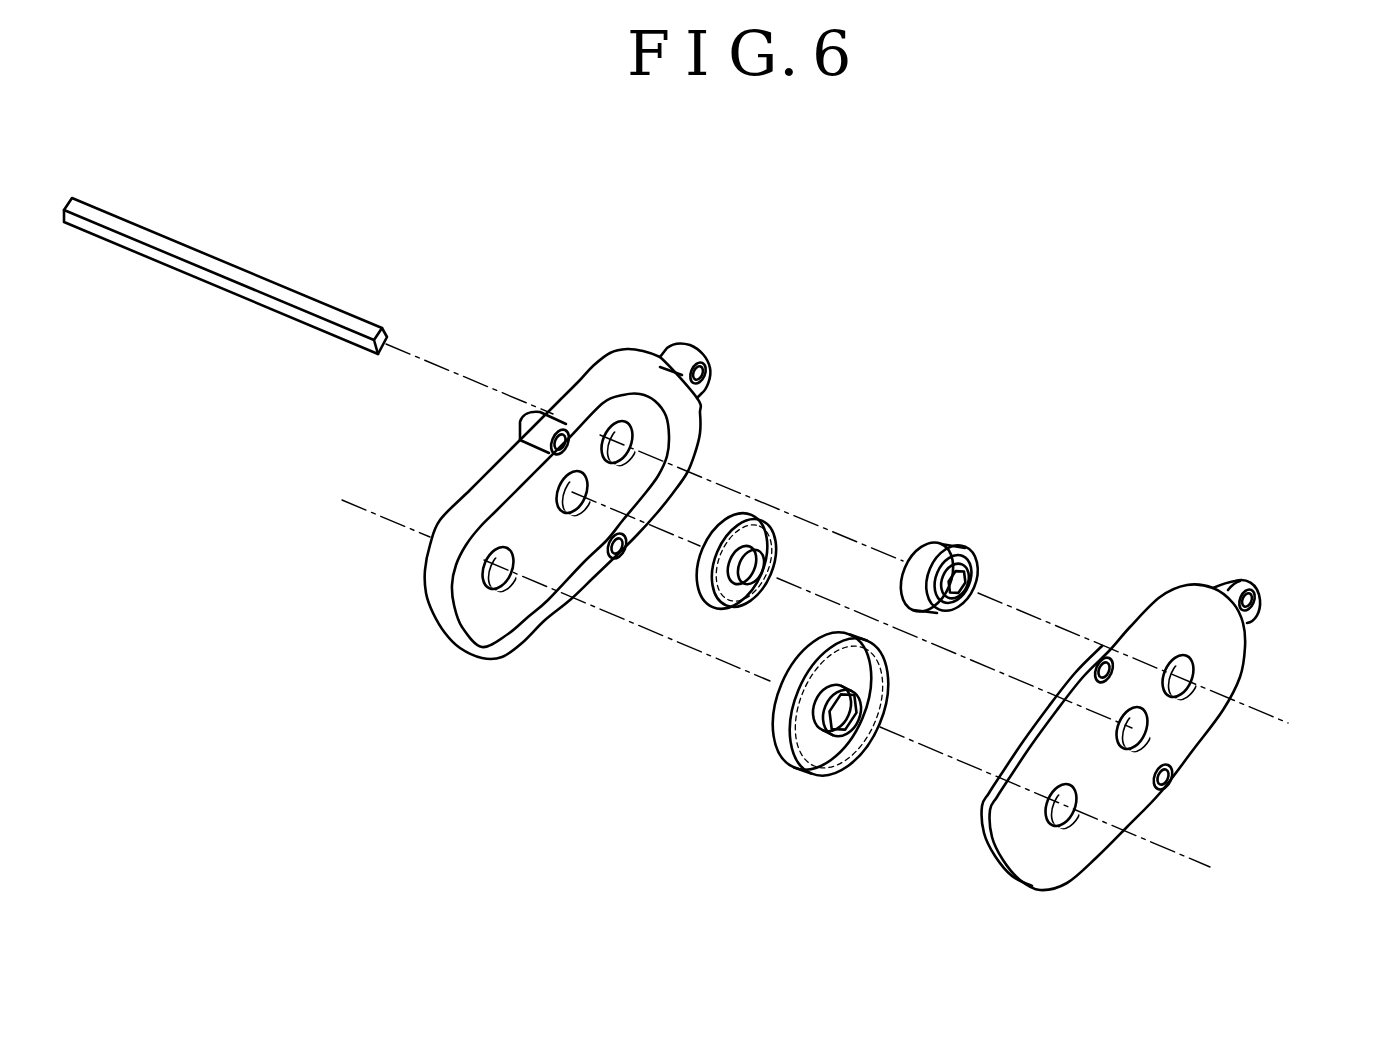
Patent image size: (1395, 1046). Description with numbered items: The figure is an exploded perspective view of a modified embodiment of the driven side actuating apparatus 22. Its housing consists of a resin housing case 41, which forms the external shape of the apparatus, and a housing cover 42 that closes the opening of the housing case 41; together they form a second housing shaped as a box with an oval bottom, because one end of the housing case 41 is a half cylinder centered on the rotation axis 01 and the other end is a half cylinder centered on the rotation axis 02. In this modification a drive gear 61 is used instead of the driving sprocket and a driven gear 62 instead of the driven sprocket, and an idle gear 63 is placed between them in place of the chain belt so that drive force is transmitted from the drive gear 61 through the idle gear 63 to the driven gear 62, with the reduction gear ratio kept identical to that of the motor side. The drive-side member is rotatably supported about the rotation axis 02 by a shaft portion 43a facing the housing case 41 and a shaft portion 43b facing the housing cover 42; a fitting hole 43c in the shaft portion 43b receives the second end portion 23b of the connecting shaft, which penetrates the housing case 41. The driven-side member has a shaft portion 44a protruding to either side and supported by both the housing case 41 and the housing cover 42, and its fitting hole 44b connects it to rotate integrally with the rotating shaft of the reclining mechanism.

The driven side actuating apparatus 22 is at (581, 311).
The second end portion of the connecting shaft 23b is at (323, 312).
The housing case 41 is at (460, 526).
The housing cover 42 is at (1053, 743).
The shaft portion 43a is at (910, 542).
The shaft portion 43b is at (972, 549).
The fitting hole 43c is at (963, 607).
The shaft portion 44a is at (850, 677).
The fitting hole 44b is at (853, 730).
The drive gear 61 is at (937, 538).
The driven gear 62 is at (773, 743).
The idle gear 63 is at (738, 498).
The rotation axis 01 is at (1187, 853).
The rotation axis 02 is at (1270, 717).